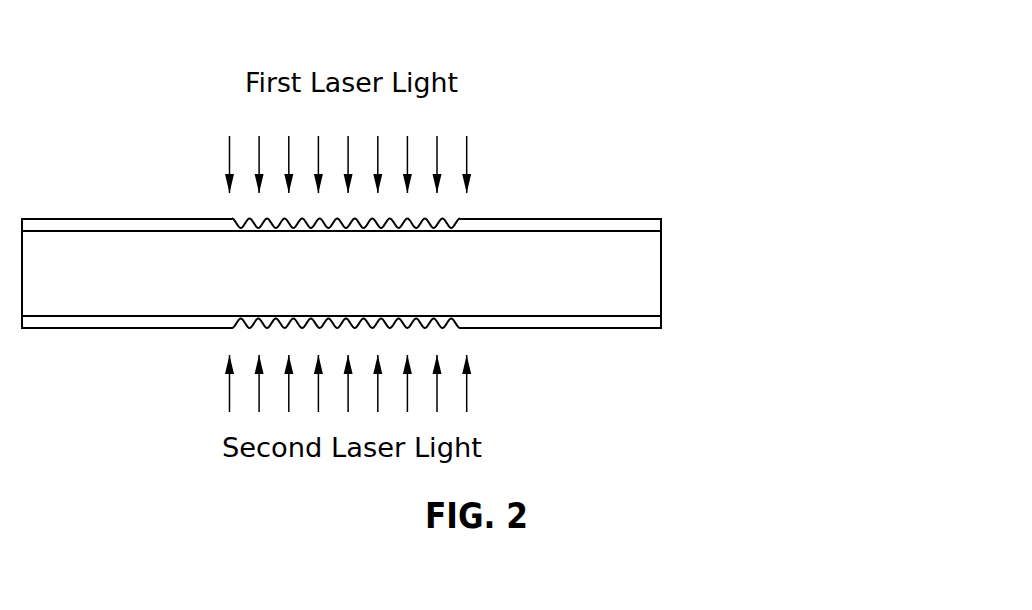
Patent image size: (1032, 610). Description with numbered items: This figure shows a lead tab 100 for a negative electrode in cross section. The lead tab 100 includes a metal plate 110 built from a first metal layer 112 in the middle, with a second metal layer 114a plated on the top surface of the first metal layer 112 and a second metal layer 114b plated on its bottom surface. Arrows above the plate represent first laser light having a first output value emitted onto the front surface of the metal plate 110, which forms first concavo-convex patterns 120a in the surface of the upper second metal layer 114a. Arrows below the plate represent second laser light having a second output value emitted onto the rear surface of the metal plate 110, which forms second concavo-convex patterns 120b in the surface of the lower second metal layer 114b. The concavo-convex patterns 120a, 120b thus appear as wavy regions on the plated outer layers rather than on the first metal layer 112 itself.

The lead tab 100 is at (473, 283).
The metal plate 110 is at (429, 275).
The first metal layer 112 is at (661, 274).
The second metal layer 114a is at (661, 226).
The second metal layer 114b is at (661, 322).
The first concavo-convex patterns 120a is at (448, 219).
The second concavo-convex patterns 120b is at (443, 327).